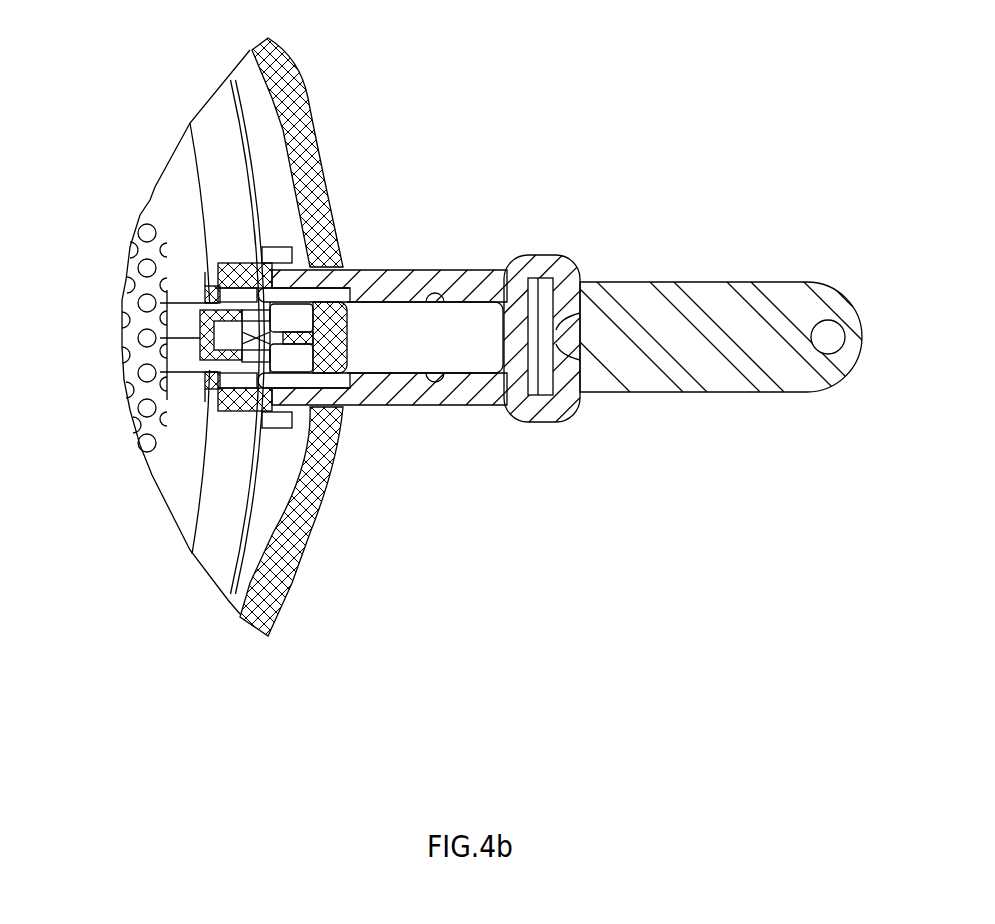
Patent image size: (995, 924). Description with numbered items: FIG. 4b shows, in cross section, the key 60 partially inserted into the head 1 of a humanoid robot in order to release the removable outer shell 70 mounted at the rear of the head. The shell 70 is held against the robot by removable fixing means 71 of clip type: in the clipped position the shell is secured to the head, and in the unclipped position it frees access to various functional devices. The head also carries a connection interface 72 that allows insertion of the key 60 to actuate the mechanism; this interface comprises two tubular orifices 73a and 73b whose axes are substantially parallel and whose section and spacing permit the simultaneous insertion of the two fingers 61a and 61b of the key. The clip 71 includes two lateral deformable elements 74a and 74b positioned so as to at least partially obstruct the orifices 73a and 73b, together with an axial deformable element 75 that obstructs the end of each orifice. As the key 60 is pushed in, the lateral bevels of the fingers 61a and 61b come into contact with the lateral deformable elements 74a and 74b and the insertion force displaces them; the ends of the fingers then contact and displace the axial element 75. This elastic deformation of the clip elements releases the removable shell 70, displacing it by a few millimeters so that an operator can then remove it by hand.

The head 1 is at (222, 326).
The key 60 is at (797, 287).
The finger 61a is at (477, 270).
The finger 61b is at (487, 405).
The removable outer shell 70 is at (230, 160).
The removable fixing means 71 is at (186, 409).
The connection interface 72 is at (442, 351).
The tubular orifice 73a is at (330, 268).
The tubular orifice 73b is at (333, 408).
The lateral deformable element 74a is at (238, 265).
The lateral deformable element 74b is at (223, 412).
The axial deformable element 75 is at (210, 290).